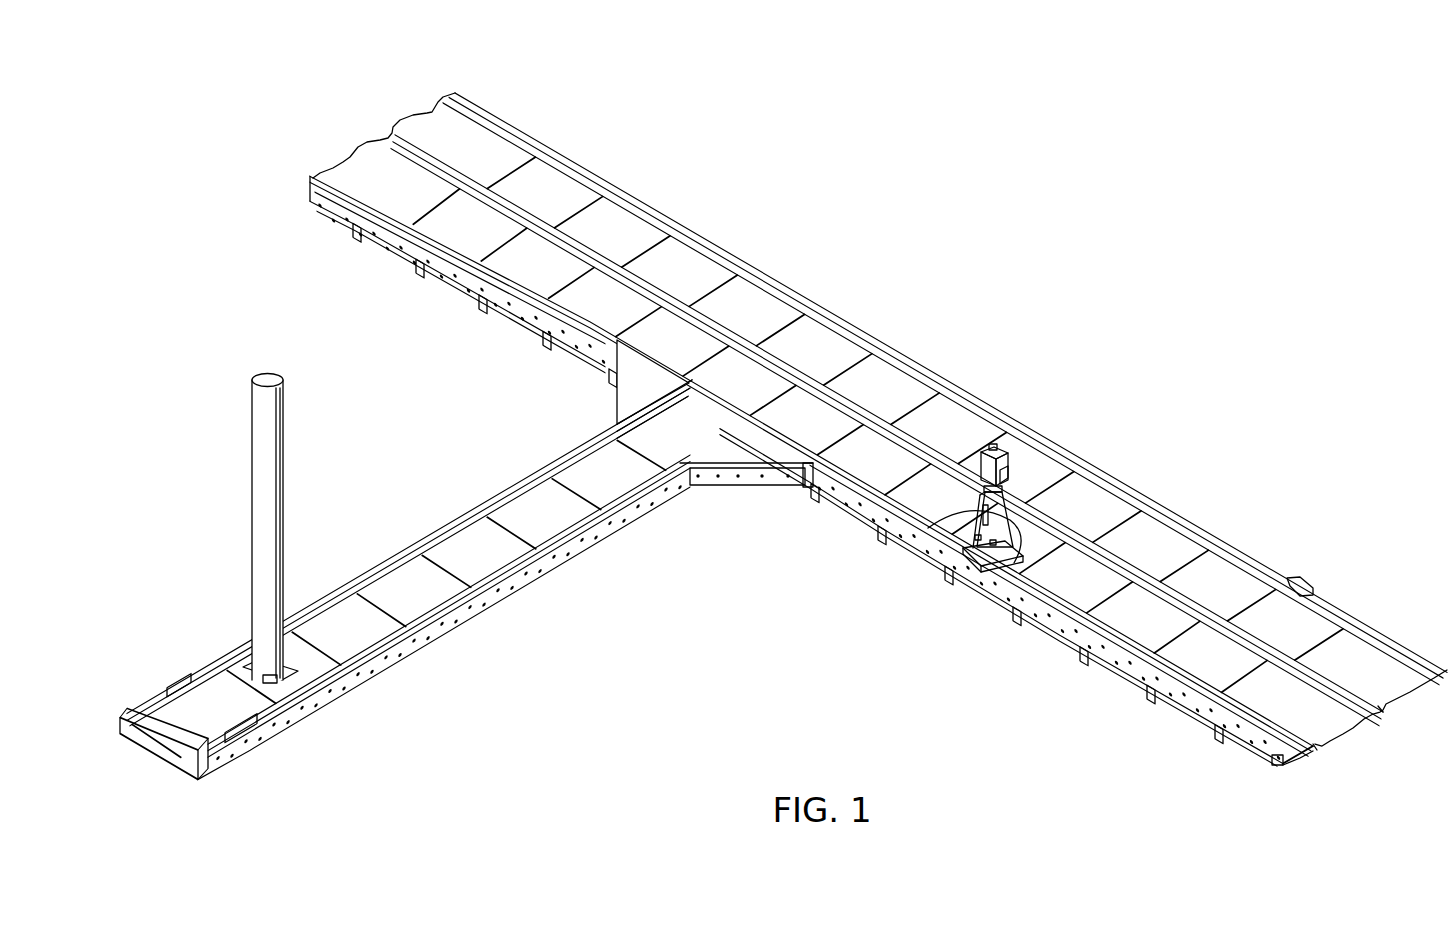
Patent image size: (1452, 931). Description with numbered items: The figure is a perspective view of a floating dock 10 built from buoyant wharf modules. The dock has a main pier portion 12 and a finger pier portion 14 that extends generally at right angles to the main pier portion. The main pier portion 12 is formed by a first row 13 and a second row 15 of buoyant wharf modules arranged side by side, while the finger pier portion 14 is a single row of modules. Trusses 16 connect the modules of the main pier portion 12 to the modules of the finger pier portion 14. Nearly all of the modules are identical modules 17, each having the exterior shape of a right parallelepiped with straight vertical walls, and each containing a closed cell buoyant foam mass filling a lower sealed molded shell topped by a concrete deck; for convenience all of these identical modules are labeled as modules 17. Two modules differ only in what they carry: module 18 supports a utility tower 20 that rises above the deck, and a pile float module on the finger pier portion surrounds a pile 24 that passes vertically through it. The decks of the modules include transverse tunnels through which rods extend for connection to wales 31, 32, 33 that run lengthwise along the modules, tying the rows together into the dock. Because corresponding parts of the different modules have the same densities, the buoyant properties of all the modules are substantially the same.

The floating dock 10 is at (783, 441).
The main pier portion 12 is at (878, 433).
The first row 13 is at (1290, 608).
The finger pier portion 14 is at (512, 552).
The second row 15 is at (1206, 669).
The trusses 16 is at (613, 400).
The buoyant wharf modules 17 is at (540, 500).
The module 18 is at (1012, 568).
The utility tower 20 is at (933, 541).
The pile 24 is at (262, 505).
The wale 31 is at (1248, 735).
The wale 32 is at (1310, 753).
The wale 33 is at (1315, 748).